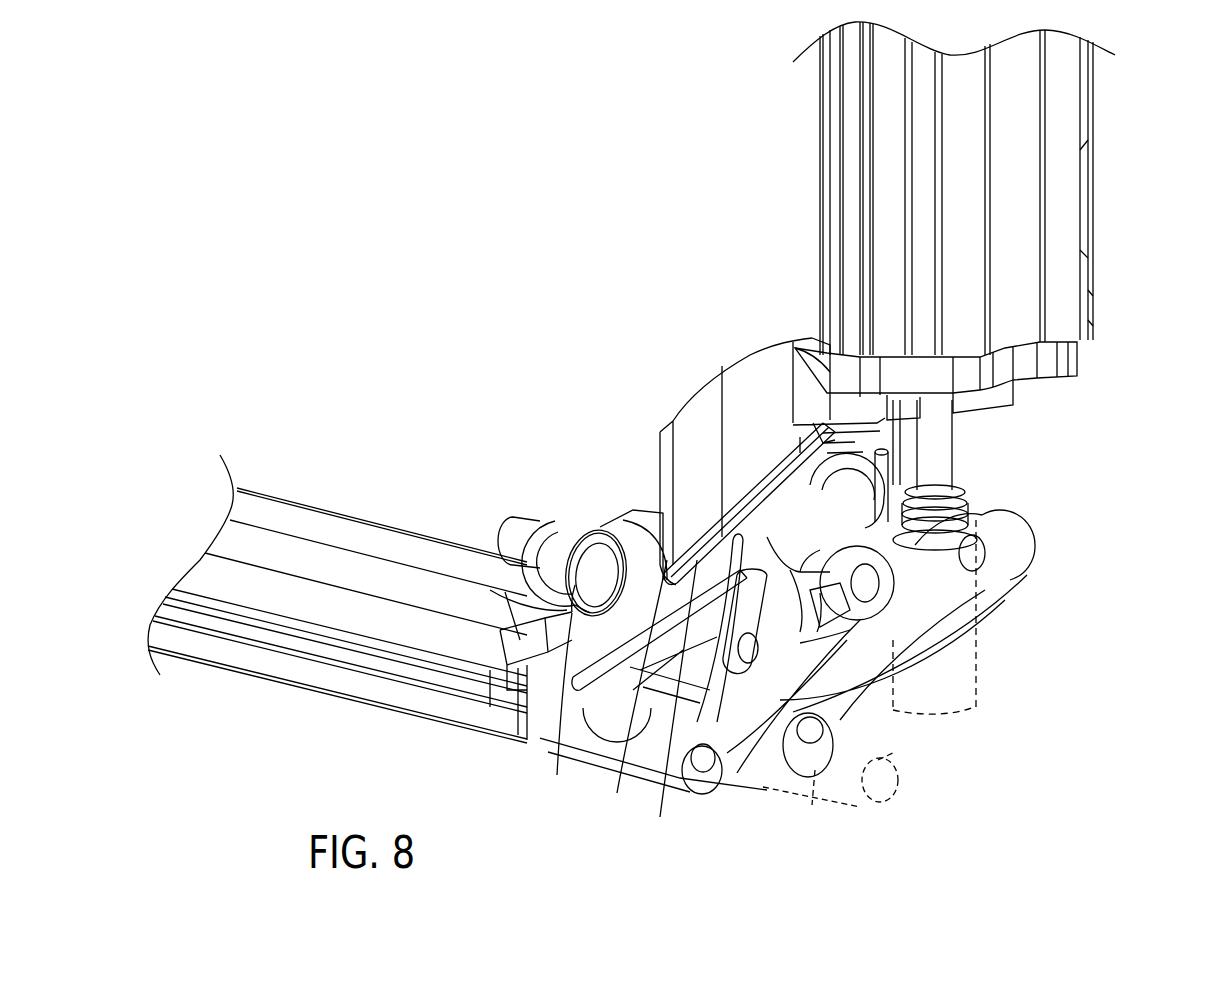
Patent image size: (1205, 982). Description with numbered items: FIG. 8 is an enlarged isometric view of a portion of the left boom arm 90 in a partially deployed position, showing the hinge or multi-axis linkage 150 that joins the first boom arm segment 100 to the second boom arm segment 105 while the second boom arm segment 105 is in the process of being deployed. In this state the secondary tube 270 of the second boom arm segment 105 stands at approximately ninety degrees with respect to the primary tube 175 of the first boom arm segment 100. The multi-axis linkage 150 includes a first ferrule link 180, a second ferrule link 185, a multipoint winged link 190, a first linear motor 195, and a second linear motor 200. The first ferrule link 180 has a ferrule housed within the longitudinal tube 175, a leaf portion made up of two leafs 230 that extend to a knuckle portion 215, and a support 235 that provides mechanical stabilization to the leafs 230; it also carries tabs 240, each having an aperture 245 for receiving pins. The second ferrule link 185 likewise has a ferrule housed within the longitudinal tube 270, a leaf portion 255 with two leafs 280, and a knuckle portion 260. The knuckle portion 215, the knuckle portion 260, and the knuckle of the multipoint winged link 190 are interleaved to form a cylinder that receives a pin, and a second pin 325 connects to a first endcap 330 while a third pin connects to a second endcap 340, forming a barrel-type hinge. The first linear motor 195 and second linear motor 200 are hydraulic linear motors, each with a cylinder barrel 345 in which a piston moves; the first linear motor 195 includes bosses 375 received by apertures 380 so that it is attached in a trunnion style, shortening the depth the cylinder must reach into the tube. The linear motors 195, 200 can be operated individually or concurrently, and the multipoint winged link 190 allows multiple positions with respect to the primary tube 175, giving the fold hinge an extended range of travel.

The left boom arm 90 is at (380, 352).
The first boom arm segment 100 is at (290, 680).
The second boom arm segment 105 is at (1072, 247).
The multi-axis linkage 150 is at (974, 776).
The longitudinal tube 175 is at (326, 513).
The first ferrule link 180 is at (547, 715).
The second ferrule link 185 is at (796, 340).
The multipoint winged link 190 is at (993, 553).
The first linear motor 195 is at (818, 805).
The second linear motor 200 is at (975, 675).
The knuckle portion 215 is at (727, 572).
The leafs 230 is at (578, 648).
The support 235 is at (637, 515).
The tabs 240 is at (541, 518).
The aperture 245 is at (567, 537).
The leaf portion 255 is at (707, 410).
The knuckle portion 260 is at (668, 640).
The longitudinal tube 270 is at (858, 204).
The leafs 280 is at (882, 470).
The second pin 325 is at (510, 535).
The first endcap 330 is at (585, 577).
The second endcap 340 is at (845, 510).
The cylinder barrel 345 is at (890, 785).
The bosses 375 is at (850, 735).
The apertures 380 is at (712, 772).